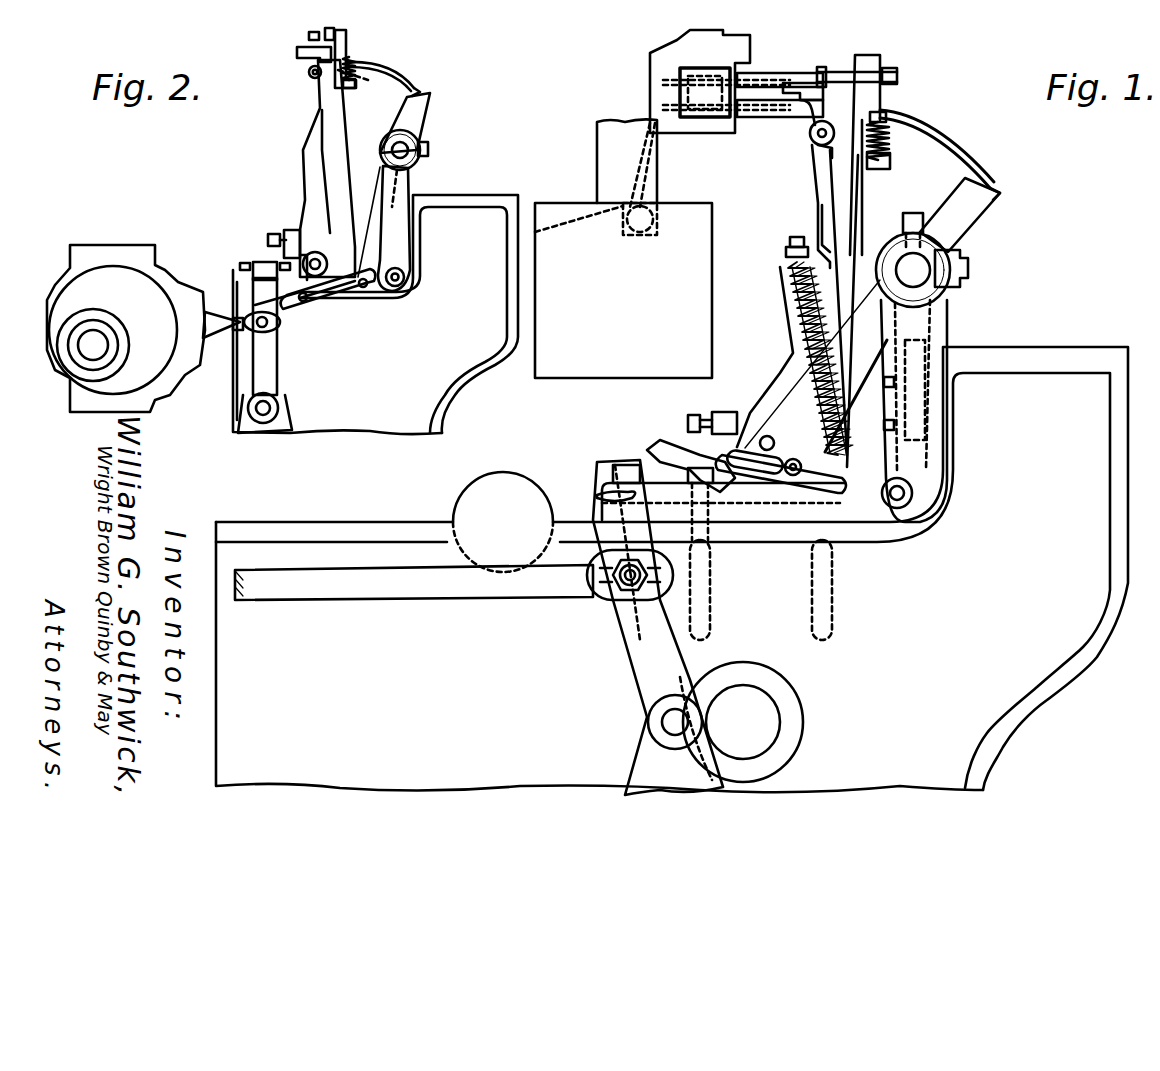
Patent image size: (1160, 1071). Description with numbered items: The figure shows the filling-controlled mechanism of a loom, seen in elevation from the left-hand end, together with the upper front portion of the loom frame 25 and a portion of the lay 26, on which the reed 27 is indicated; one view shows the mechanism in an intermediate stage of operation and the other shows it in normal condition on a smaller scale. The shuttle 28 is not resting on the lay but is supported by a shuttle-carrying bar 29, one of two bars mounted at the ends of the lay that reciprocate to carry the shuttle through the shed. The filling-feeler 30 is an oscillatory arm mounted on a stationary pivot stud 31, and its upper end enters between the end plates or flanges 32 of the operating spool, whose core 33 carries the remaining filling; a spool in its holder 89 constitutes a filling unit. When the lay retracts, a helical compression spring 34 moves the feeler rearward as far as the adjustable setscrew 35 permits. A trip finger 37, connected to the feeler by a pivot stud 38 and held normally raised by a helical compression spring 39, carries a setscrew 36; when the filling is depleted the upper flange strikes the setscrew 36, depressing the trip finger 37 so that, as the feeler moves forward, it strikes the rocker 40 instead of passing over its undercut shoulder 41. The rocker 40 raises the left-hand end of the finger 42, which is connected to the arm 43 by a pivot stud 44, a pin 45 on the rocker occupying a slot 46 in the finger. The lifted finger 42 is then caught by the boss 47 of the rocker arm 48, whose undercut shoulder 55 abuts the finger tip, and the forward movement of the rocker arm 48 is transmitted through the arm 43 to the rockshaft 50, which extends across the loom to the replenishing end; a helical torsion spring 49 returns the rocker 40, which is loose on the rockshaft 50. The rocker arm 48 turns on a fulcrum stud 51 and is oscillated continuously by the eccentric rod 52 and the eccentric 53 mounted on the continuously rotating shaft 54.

In FIG. 2, the loom frame 25 is at (440, 390).
In FIG. 1, the loom frame 25 is at (1070, 672).
In FIG. 1, the lay 26 is at (623, 290).
In FIG. 1, the reed 27 is at (627, 163).
In FIG. 1, the shuttle 28 is at (757, 118).
In FIG. 1, the shuttle-carrying bar 29 is at (712, 70).
In FIG. 2, the filling-feeler 30 is at (297, 52).
In FIG. 1, the filling-feeler 30 is at (790, 86).
In FIG. 2, the pivot stud 31 is at (326, 252).
In FIG. 1, the pivot stud 31 is at (756, 470).
In FIG. 1, the end plates or flanges 32 is at (820, 75).
In FIG. 1, the core 33 is at (750, 88).
In FIG. 1, the helical compression spring 34 is at (792, 326).
In FIG. 2, the adjustable setscrew 35 is at (281, 232).
In FIG. 1, the adjustable setscrew 35 is at (717, 412).
In FIG. 2, the adjustable setscrew 36 is at (309, 36).
In FIG. 1, the adjustable setscrew 36 is at (885, 68).
In FIG. 2, the trip finger 37 is at (397, 78).
In FIG. 1, the trip finger 37 is at (930, 140).
In FIG. 2, the pivot stud 38 is at (309, 74).
In FIG. 1, the pivot stud 38 is at (818, 142).
In FIG. 2, the helical compression spring 39 is at (352, 65).
In FIG. 1, the helical compression spring 39 is at (888, 148).
In FIG. 2, the rocker 40 is at (426, 114).
In FIG. 1, the rocker 40 is at (952, 212).
In FIG. 2, the undercut shoulder 41 is at (424, 96).
In FIG. 1, the undercut shoulder 41 is at (997, 188).
In FIG. 2, the finger 42 is at (245, 312).
In FIG. 1, the finger 42 is at (668, 446).
In FIG. 2, the arm 43 is at (405, 190).
In FIG. 1, the arm 43 is at (930, 333).
In FIG. 2, the pivot stud 44 is at (406, 279).
In FIG. 1, the pivot stud 44 is at (903, 503).
In FIG. 2, the pin 45 is at (363, 287).
In FIG. 1, the pin 45 is at (787, 475).
In FIG. 2, the slot 46 is at (304, 300).
In FIG. 1, the slot 46 is at (758, 432).
In FIG. 2, the boss 47 is at (253, 272).
In FIG. 1, the boss 47 is at (595, 500).
In FIG. 2, the rocker arm 48 is at (270, 368).
In FIG. 1, the rocker arm 48 is at (636, 657).
In FIG. 2, the helical torsion spring 49 is at (430, 148).
In FIG. 1, the helical torsion spring 49 is at (970, 247).
In FIG. 2, the rockshaft 50 is at (398, 148).
In FIG. 1, the rockshaft 50 is at (913, 260).
In FIG. 2, the fulcrum stud 51 is at (266, 412).
In FIG. 1, the fulcrum stud 51 is at (660, 733).
In FIG. 2, the eccentric rod 52 is at (175, 365).
In FIG. 1, the eccentric rod 52 is at (360, 582).
In FIG. 2, the eccentric 53 is at (126, 328).
In FIG. 2, the continuously rotating shaft 54 is at (92, 347).
In FIG. 1, the continuously rotating shaft 54 is at (743, 722).
In FIG. 2, the undercut shoulder 55 is at (266, 268).
In FIG. 1, the undercut shoulder 55 is at (610, 482).
In FIG. 1, the holder 89 is at (790, 125).